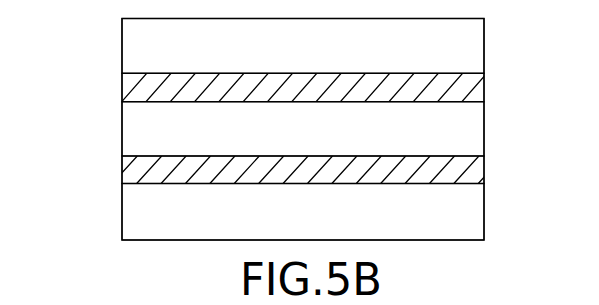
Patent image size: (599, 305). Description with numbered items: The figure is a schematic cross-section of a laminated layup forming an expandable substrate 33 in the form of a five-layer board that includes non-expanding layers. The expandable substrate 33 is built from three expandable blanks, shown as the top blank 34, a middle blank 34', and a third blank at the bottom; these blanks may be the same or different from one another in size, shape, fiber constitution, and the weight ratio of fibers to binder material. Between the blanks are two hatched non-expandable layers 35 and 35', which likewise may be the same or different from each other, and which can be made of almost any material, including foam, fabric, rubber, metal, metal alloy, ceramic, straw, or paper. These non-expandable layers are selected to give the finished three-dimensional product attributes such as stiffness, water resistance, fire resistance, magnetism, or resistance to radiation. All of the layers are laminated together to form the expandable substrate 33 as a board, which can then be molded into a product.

The expandable substrate 33 is at (104, 144).
The blank 34 is at (341, 46).
The non-expandable layer 35 is at (341, 84).
The blank 34' is at (343, 129).
The non-expandable layer 35' is at (338, 167).